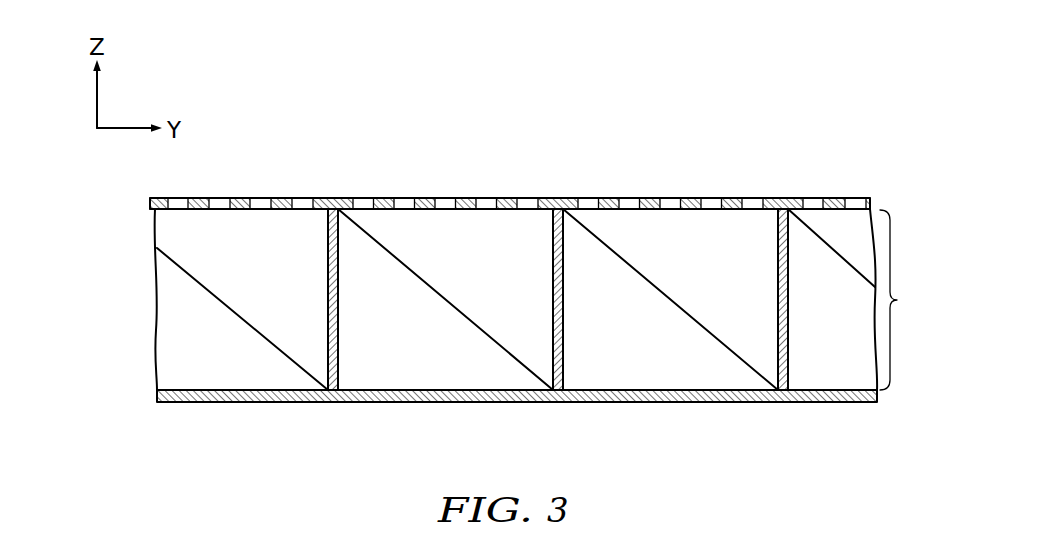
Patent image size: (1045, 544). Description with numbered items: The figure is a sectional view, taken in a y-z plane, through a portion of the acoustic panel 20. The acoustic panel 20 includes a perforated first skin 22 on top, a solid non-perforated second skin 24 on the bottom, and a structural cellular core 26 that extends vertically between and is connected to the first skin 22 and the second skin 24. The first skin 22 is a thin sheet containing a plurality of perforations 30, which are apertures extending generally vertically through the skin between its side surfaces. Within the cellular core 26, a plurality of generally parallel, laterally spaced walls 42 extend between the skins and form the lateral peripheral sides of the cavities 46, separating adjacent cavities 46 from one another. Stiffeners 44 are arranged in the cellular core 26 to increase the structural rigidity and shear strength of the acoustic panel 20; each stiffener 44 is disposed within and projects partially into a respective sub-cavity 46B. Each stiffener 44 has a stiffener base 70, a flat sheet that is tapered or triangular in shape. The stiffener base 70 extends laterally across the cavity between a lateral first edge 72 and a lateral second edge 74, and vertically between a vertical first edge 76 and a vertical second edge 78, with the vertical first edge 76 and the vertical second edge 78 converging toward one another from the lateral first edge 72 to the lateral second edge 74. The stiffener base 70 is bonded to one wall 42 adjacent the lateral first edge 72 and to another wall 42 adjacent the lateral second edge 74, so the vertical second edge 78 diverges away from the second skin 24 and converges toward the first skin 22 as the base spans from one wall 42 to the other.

The acoustic panel 20 is at (826, 150).
The first skin 22 is at (859, 195).
The second skin 24 is at (859, 406).
The cellular core 26 is at (909, 300).
The perforations 30 is at (485, 198).
The walls 42 is at (338, 364).
The stiffeners 44 is at (188, 287).
The cavities 46 is at (257, 374).
The sub-cavities 46B is at (198, 368).
The stiffener base 70 is at (261, 297).
The lateral first edge 72 is at (563, 248).
The lateral second edge 74 is at (333, 198).
The vertical first edge 76 is at (381, 198).
The vertical second edge 78 is at (387, 256).